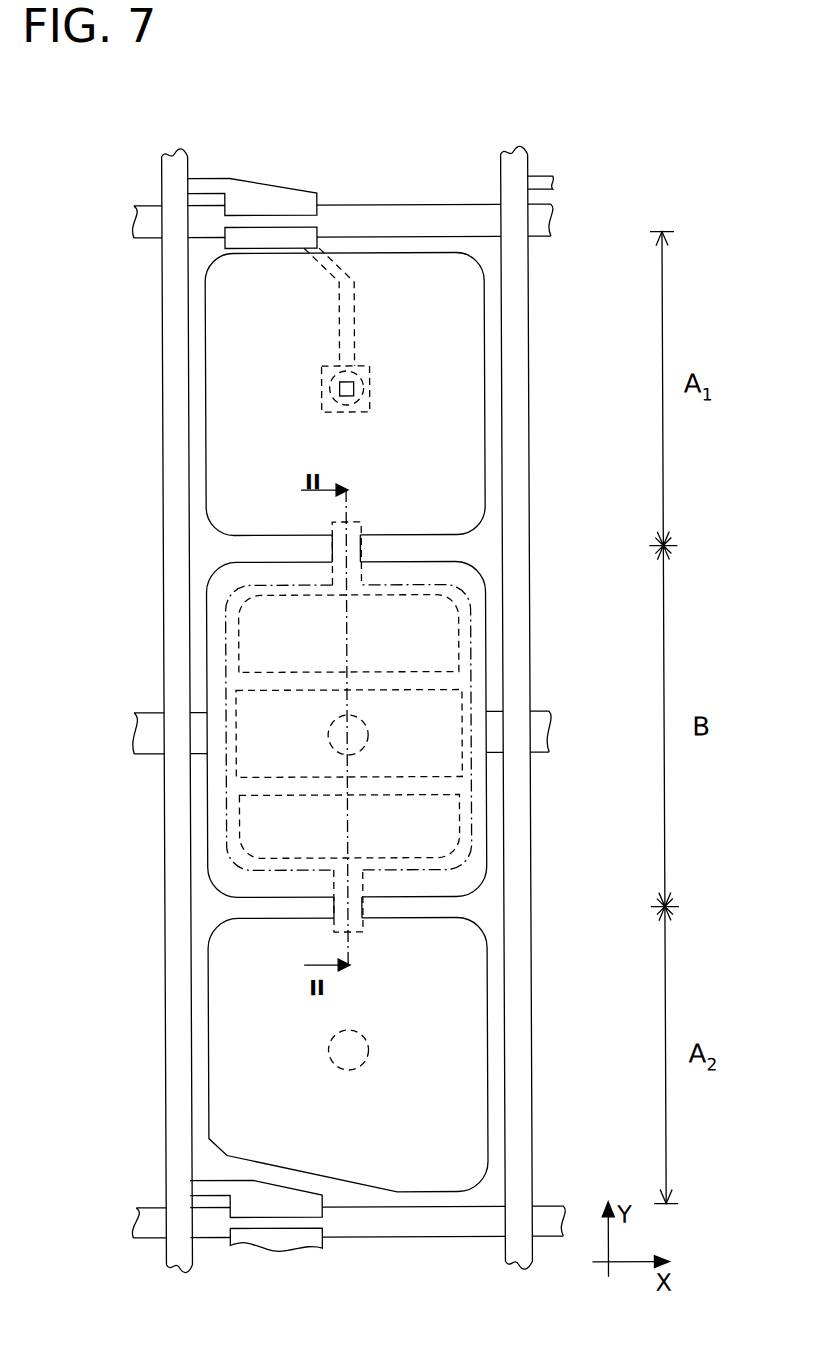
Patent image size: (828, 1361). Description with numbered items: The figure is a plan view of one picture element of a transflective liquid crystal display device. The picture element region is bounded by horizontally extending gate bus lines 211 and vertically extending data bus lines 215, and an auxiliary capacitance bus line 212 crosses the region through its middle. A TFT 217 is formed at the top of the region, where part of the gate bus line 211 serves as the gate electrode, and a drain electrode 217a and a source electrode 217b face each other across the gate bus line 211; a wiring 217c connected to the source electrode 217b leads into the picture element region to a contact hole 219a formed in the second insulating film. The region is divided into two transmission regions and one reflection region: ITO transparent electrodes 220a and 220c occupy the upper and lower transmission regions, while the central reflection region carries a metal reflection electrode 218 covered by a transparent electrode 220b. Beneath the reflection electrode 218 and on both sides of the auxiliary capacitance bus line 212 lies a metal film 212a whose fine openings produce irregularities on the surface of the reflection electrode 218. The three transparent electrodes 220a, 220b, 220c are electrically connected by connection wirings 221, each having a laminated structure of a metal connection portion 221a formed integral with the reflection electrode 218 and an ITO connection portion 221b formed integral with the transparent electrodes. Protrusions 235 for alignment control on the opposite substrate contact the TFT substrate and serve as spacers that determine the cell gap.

The gate bus line 211 is at (138, 218).
The auxiliary capacitance bus line 212 is at (140, 748).
The metal film 212a is at (463, 818).
The data bus line 215 is at (180, 160).
The TFT 217 is at (319, 686).
The drain electrode 217a is at (238, 198).
The source electrode 217b is at (272, 250).
The wiring 217c is at (354, 313).
The reflection electrode 218 is at (472, 645).
The contact hole 219a is at (340, 388).
The transparent electrode 220a is at (218, 362).
The transparent electrode 220b is at (342, 729).
The transparent electrode 220c is at (220, 983).
The connection wiring 221 is at (348, 729).
The metal connection portion 221a is at (368, 520).
The ITO connection portion 221b is at (361, 548).
The protrusion 235 is at (367, 403).